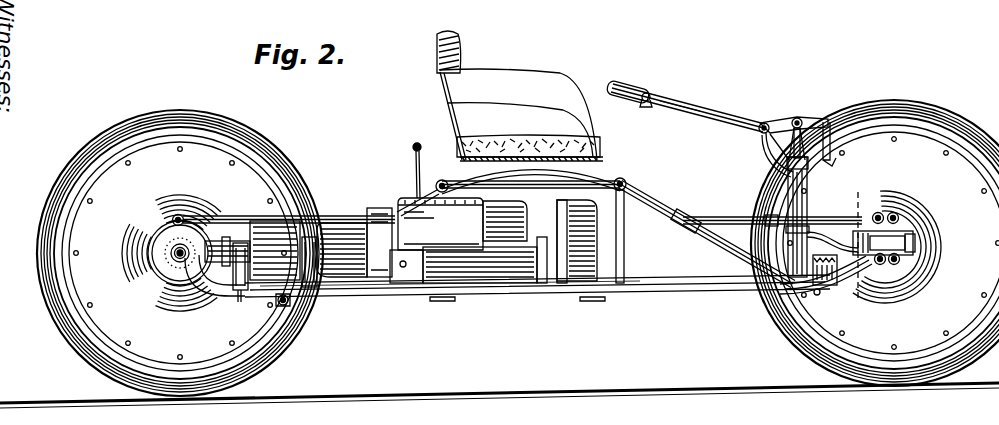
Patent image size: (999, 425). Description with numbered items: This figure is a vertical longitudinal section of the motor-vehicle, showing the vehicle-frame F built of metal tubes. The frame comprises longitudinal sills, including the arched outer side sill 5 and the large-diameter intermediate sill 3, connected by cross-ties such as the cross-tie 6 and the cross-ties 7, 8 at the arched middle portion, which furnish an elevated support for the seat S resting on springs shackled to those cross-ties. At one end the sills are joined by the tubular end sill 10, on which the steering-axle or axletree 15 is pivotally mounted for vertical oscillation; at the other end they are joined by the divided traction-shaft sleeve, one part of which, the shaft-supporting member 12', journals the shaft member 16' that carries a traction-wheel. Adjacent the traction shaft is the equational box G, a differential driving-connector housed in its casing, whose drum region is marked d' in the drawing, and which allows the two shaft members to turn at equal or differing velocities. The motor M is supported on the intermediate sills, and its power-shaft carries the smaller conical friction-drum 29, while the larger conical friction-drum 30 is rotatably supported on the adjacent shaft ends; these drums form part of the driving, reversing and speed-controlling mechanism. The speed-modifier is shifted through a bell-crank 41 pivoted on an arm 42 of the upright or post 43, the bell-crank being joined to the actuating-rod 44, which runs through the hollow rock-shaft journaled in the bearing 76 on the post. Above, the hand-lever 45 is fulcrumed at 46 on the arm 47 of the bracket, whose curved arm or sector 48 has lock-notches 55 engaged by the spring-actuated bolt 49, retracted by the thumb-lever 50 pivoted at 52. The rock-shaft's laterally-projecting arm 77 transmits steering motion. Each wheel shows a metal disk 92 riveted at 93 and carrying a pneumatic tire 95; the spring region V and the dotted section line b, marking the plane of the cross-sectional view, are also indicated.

The pneumatic tire 95 is at (272, 158).
The rivets 93 is at (77, 251).
The metal disk 92 is at (110, 315).
The equational box G is at (176, 253).
The shaft-supporting member 12' is at (143, 252).
The shaft member 16' is at (142, 252).
The spring drum d' is at (183, 253).
The conical friction-drum 29 is at (338, 225).
The conical friction-drum 30 is at (262, 228).
The cross-tie 6 is at (277, 303).
The vehicle-frame F is at (537, 276).
The intermediate sill 3 is at (663, 286).
The motor M is at (493, 240).
The cross-tie 7 is at (443, 186).
The cross-tie 8 is at (620, 180).
The side sill 5 is at (637, 198).
The upright or post 43 is at (764, 238).
The seat S is at (520, 96).
The spring-actuated bolt 49 is at (748, 118).
The hand-lever 45 is at (690, 107).
The thumb-lever 50 is at (642, 90).
The pivot 52 is at (644, 102).
The fulcrum 46 is at (759, 133).
The curved arm or sector 48 is at (800, 131).
The arm 47 is at (773, 152).
The actuating-rod 44 is at (786, 168).
The lock-notches 55 is at (829, 131).
The bearing 76 is at (808, 186).
The laterally-projecting arm 77 is at (827, 231).
The arm 42 is at (786, 292).
The bell-crank 41 is at (828, 287).
The steering-axle or axletree 15 is at (888, 231).
The end sill 10 is at (888, 264).
The spring V is at (815, 278).
The section line b is at (857, 245).